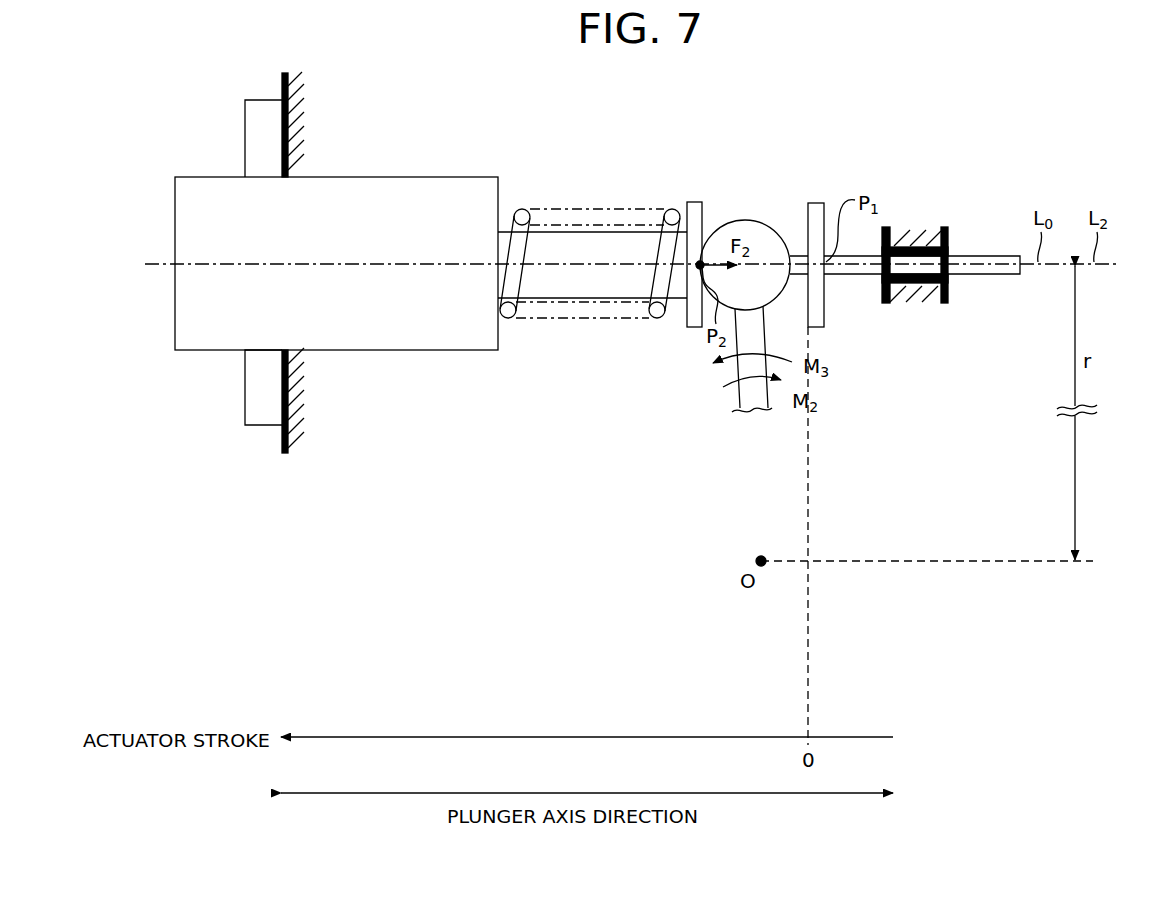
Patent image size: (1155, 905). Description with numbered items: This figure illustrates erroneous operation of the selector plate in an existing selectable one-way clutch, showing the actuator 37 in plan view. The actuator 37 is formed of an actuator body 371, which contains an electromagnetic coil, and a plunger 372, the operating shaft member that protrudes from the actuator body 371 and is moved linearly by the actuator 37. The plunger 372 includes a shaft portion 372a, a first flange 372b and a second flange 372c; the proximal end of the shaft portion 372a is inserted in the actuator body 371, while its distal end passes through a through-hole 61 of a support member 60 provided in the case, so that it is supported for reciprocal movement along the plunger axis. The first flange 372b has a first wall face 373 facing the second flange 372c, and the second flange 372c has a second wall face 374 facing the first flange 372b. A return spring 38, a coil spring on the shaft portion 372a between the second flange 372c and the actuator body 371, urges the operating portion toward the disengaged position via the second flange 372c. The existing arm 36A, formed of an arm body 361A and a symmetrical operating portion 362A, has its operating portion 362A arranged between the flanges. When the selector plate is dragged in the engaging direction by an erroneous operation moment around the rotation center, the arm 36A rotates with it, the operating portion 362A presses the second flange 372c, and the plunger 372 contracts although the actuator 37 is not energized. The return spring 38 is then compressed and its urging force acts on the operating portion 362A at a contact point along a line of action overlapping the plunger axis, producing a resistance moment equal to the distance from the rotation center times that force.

The actuator 37 is at (176, 98).
The actuator body 371 is at (462, 177).
The plunger 372 is at (563, 233).
The shaft portion 372a is at (1009, 254).
The first flange 372b is at (818, 201).
The second flange 372c is at (690, 201).
The first wall face 373 is at (805, 209).
The second wall face 374 is at (709, 210).
The return spring 38 is at (628, 208).
The arm 36A is at (718, 268).
The arm body 361A is at (741, 400).
The operating portion 362A is at (762, 228).
The support member 60 is at (930, 261).
The through-hole 61 is at (951, 284).